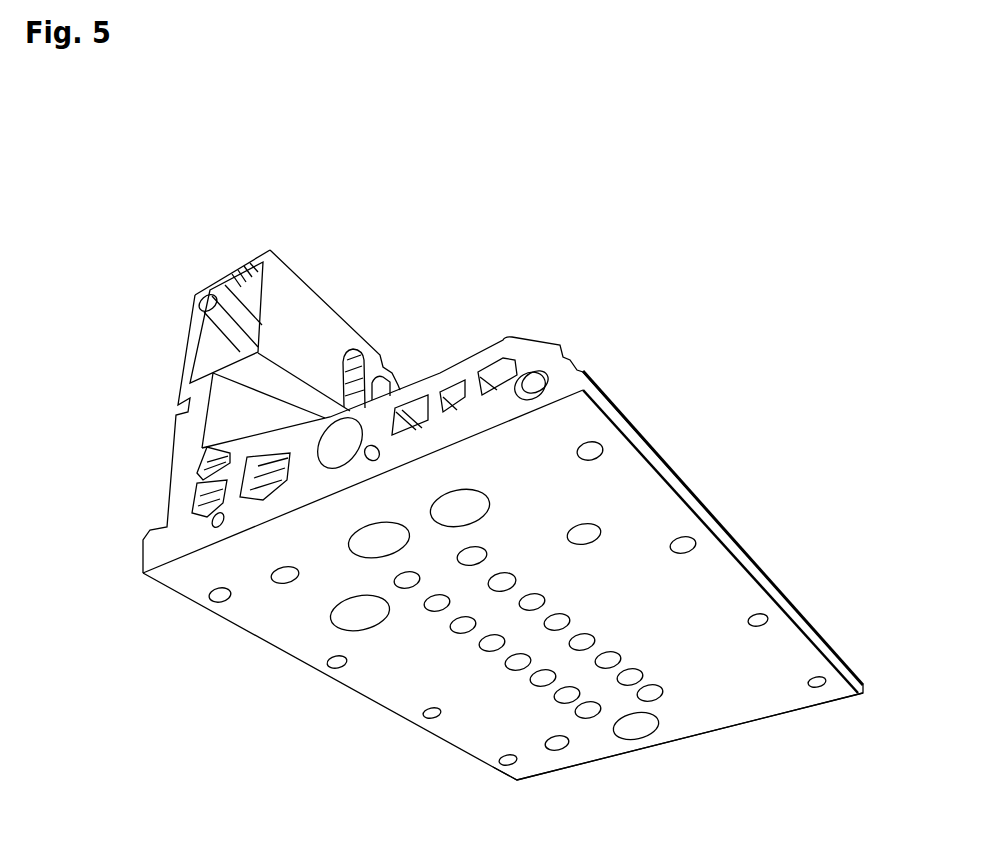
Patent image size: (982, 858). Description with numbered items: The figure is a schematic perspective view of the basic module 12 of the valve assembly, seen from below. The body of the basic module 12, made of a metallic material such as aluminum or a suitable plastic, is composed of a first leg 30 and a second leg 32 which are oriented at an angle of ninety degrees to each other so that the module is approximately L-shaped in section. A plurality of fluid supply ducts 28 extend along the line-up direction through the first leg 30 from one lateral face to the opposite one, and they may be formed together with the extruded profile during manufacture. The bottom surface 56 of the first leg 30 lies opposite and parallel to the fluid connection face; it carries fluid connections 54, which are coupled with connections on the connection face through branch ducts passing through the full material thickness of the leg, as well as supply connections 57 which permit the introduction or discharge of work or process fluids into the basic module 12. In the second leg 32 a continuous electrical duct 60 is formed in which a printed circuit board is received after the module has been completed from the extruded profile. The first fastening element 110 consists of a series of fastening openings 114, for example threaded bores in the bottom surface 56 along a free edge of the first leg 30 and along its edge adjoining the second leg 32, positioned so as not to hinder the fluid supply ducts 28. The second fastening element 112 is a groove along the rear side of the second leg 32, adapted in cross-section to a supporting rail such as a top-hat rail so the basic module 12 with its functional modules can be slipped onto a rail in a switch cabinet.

The basic module 12 is at (133, 187).
The fluid supply ducts 28 is at (416, 414).
The first leg 30 is at (732, 718).
The second leg 32 is at (193, 333).
The fluid connection 54 is at (538, 682).
The bottom surface 56 is at (583, 750).
The supply connections 57 is at (370, 542).
The electrical duct 60 is at (217, 353).
The first fastening element 110 is at (823, 687).
The second fastening element 112 is at (180, 455).
The fastening openings 114 is at (337, 662).